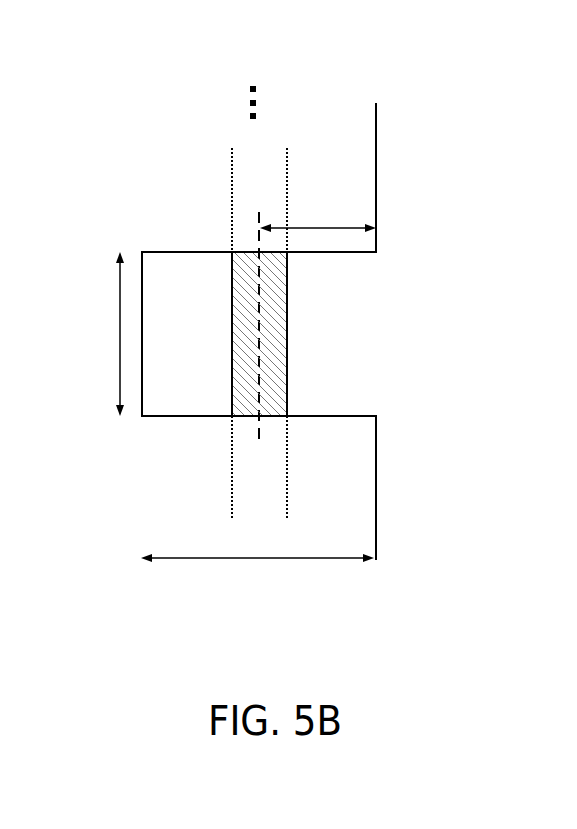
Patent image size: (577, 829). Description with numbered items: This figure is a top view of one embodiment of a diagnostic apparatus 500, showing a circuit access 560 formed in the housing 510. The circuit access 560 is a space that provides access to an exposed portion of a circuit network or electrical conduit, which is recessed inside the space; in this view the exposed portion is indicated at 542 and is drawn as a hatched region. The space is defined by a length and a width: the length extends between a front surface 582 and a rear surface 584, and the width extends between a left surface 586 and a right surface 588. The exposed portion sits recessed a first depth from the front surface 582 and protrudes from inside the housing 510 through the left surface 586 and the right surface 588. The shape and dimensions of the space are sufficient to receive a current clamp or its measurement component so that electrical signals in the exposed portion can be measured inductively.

The diagnostic apparatus 500 is at (152, 40).
The housing 510 is at (188, 520).
The feed region 542 is at (275, 330).
The circuit access 560 is at (462, 330).
The front surface 582 is at (377, 207).
The rear surface 584 is at (143, 337).
The left surface 586 is at (350, 415).
The right surface 588 is at (347, 253).